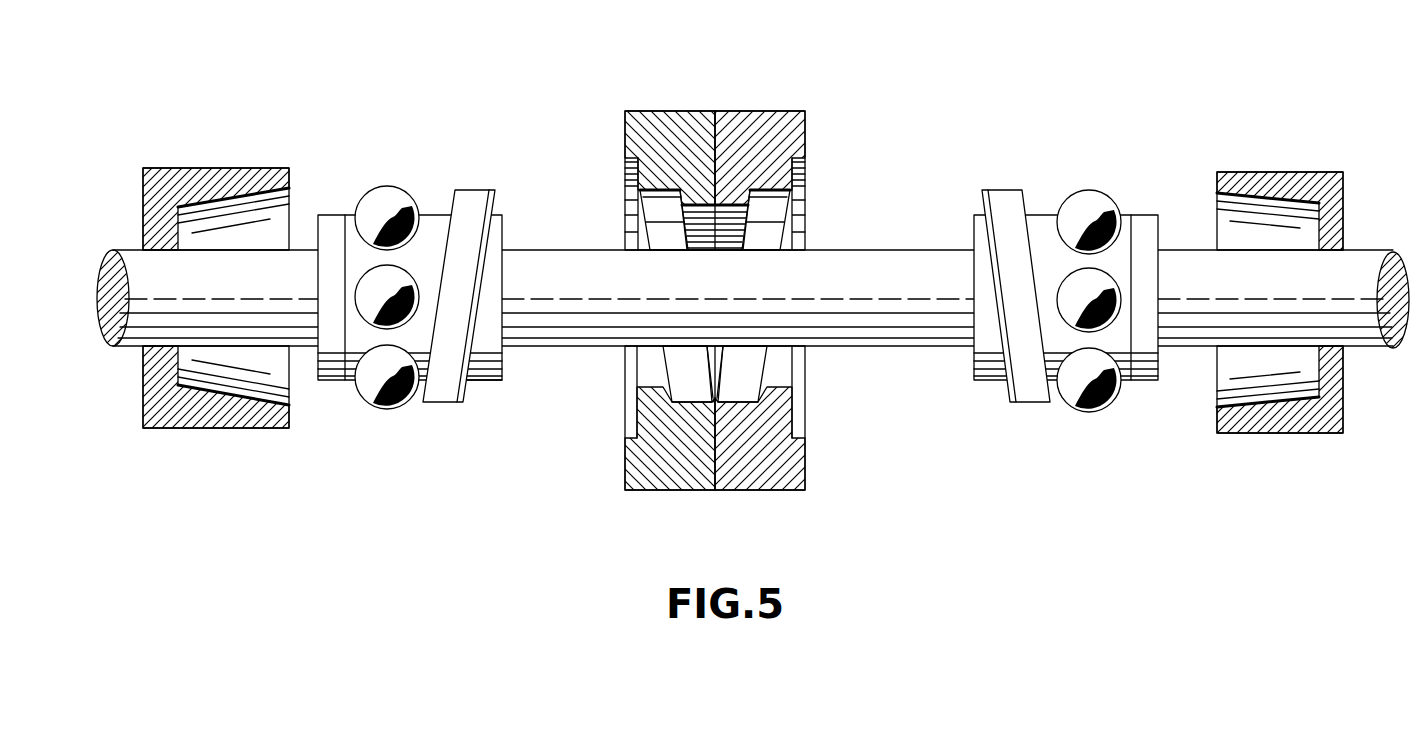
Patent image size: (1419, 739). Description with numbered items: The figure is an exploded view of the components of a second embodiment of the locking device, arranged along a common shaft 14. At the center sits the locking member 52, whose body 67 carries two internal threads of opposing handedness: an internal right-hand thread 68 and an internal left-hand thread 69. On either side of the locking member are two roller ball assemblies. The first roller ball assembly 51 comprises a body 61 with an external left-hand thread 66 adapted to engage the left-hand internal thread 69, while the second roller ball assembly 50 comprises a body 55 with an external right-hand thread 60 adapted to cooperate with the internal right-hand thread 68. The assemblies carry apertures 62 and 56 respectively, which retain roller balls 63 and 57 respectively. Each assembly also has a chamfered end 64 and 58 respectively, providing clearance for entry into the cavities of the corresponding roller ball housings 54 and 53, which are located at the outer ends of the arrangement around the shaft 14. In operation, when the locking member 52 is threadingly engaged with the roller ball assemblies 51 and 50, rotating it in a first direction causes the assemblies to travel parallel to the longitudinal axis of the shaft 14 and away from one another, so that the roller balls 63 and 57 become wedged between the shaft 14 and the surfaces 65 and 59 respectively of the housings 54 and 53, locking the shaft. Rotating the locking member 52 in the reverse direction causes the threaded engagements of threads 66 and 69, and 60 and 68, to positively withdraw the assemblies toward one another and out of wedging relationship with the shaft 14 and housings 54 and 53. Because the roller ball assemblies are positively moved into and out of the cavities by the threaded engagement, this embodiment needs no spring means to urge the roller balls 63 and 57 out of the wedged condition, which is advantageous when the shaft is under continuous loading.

The shaft 14 is at (525, 308).
The second roller ball assembly 50 is at (425, 288).
The first roller ball assembly 51 is at (1067, 306).
The locking member 52 is at (705, 257).
The roller ball housing 53 is at (216, 276).
The roller ball housing 54 is at (1280, 278).
The body 55 is at (480, 378).
The apertures 56 is at (400, 283).
The roller balls 57 is at (363, 200).
The chamfered end 58 is at (328, 377).
The surface 59 is at (215, 207).
The external right-hand thread 60 is at (447, 377).
The body 61 is at (975, 360).
The apertures 62 is at (1105, 270).
The roller balls 63 is at (1103, 410).
The chamfered end 64 is at (1147, 268).
The surface 65 is at (1285, 200).
The external left-hand thread 66 is at (1023, 403).
The body 67 is at (644, 132).
The internal right-hand thread 68 is at (688, 397).
The internal left-hand thread 69 is at (748, 390).